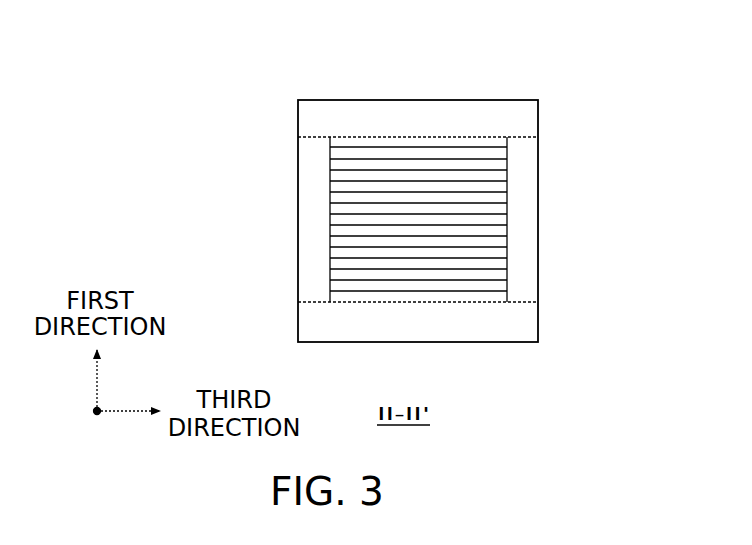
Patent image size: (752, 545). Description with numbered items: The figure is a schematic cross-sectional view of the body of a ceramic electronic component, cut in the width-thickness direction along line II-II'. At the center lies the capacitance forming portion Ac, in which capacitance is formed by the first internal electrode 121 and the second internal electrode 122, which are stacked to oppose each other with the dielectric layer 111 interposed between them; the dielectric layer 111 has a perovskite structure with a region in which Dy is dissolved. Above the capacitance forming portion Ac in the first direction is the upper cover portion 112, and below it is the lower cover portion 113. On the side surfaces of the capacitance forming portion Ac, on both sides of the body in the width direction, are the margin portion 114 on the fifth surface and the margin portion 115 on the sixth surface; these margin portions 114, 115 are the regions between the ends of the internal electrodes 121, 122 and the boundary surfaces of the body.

The upper cover portion 112 is at (423, 118).
The lower cover portion 113 is at (530, 321).
The margin portion 114 is at (313, 257).
The margin portion 115 is at (530, 246).
The first internal electrode 121 is at (508, 137).
The dielectric layer 111 is at (508, 146).
The second internal electrode 122 is at (508, 161).
The capacitance forming portion Ac is at (326, 222).